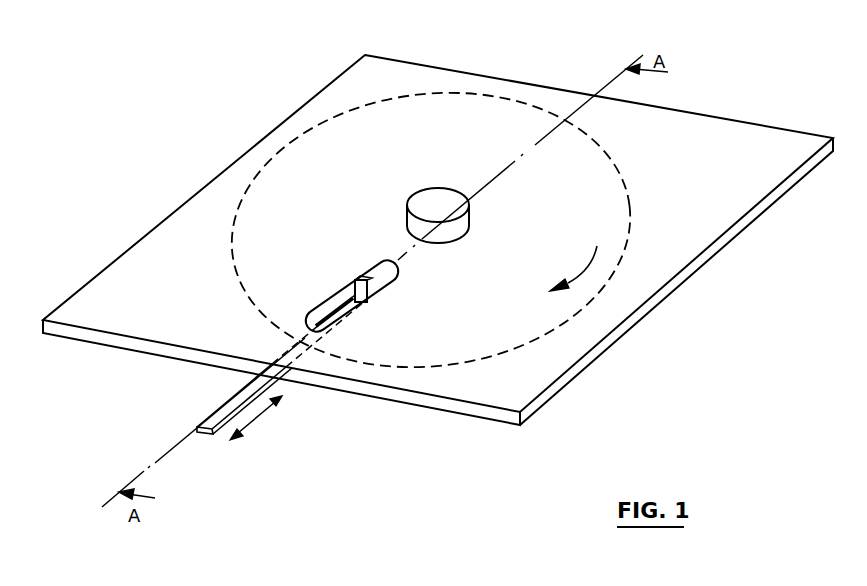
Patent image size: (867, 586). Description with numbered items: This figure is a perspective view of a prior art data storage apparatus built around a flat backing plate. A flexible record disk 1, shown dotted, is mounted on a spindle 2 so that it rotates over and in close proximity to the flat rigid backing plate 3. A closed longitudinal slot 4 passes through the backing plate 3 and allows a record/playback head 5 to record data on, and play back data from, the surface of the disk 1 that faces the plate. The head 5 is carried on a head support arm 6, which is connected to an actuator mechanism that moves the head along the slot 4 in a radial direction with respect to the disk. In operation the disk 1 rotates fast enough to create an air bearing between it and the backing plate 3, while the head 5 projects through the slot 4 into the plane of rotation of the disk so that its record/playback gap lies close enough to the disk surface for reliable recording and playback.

The flexible record disk 1 is at (454, 91).
The spindle 2 is at (441, 193).
The flat rigid backing plate 3 is at (750, 140).
The closed longitudinal slot 4 is at (386, 279).
The record/playback head 5 is at (356, 281).
The head support arm 6 is at (218, 418).